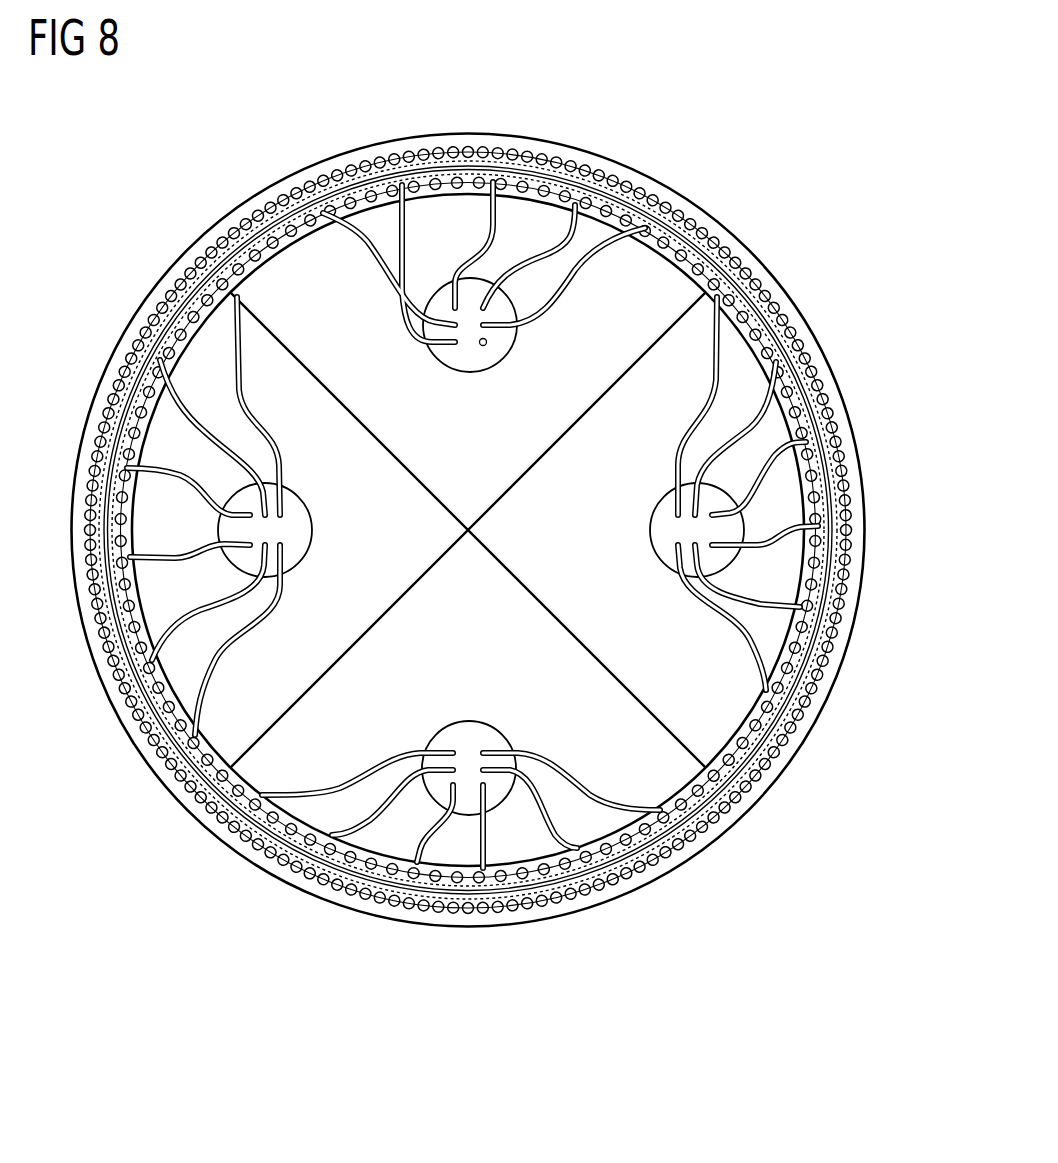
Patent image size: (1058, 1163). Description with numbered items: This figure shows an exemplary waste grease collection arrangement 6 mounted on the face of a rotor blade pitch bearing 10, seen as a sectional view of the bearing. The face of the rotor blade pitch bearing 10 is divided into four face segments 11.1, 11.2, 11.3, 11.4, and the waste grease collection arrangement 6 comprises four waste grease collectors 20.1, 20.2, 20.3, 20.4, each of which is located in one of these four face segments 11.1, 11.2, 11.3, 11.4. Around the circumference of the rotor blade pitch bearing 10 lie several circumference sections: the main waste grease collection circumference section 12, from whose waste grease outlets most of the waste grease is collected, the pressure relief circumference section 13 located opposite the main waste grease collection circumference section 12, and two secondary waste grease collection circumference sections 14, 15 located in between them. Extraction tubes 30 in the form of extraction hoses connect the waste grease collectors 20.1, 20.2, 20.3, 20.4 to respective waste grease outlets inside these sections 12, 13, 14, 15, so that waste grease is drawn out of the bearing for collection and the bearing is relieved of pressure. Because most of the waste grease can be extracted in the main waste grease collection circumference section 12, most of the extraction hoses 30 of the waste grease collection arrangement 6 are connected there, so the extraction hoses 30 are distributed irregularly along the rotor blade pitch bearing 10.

The waste grease collection arrangement 6 is at (473, 538).
The rotor blade pitch bearing 10 is at (850, 627).
The first face segment 11.1 is at (658, 788).
The second face segment 11.2 is at (665, 276).
The third face segment 11.3 is at (730, 732).
The fourth face segment 11.4 is at (223, 740).
The main waste grease collection circumference section 12 is at (440, 905).
The pressure relief circumference section 13 is at (505, 176).
The secondary waste grease collection circumference section 14 is at (832, 542).
The secondary waste grease collection circumference section 15 is at (120, 432).
The waste grease collector 20.1 is at (461, 763).
The waste grease collector 20.2 is at (502, 348).
The waste grease collector 20.3 is at (657, 532).
The waste grease collector 20.4 is at (302, 543).
The extraction tube 30 is at (332, 792).